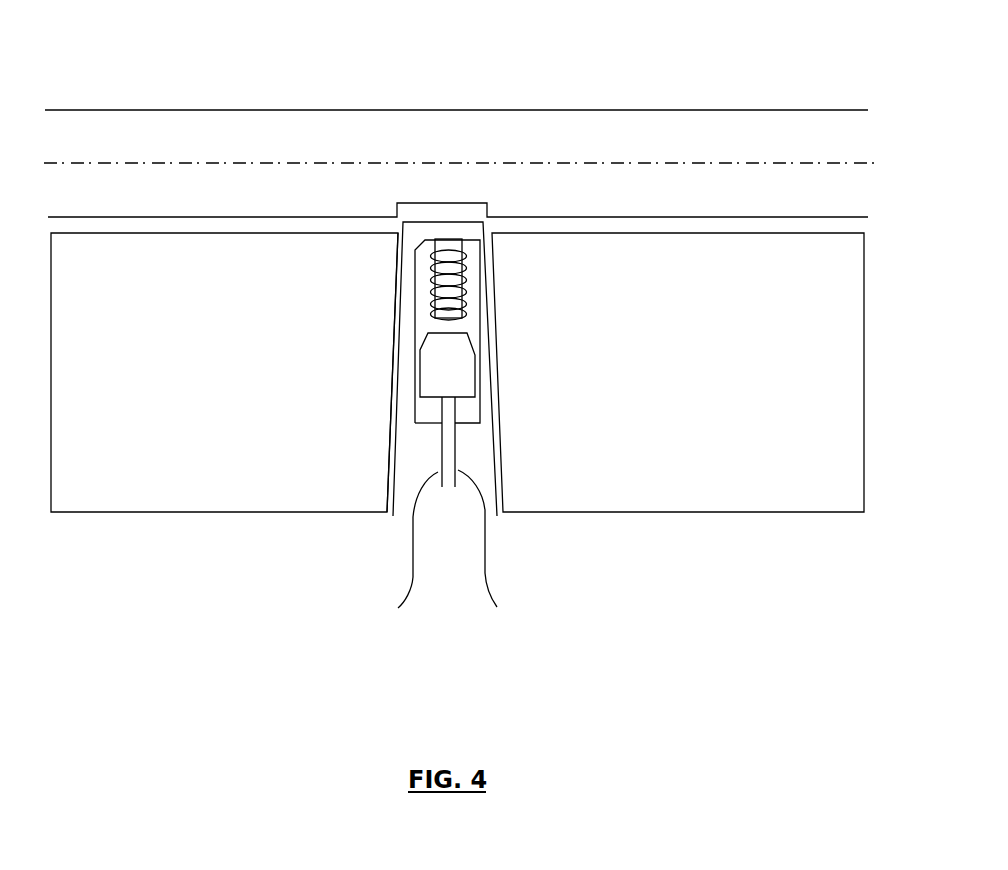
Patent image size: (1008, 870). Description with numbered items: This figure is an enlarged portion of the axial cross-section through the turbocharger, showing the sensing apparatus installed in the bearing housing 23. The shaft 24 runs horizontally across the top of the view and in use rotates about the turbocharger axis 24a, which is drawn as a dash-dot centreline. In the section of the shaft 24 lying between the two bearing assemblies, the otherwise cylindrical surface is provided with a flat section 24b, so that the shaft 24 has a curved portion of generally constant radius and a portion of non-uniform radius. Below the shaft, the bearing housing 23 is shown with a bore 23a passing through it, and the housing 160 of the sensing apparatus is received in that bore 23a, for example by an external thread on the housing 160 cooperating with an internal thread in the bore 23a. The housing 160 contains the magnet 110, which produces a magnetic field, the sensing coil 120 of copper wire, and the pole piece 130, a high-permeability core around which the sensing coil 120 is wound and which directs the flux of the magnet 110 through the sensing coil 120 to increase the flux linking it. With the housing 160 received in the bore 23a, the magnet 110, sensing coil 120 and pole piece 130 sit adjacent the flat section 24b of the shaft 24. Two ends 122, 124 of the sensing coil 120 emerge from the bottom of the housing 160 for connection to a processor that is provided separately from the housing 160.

The shaft 24 is at (540, 140).
The turbocharger axis 24a is at (810, 162).
The flat section 24b is at (422, 203).
The bearing housing 23 is at (170, 310).
The bore 23a is at (386, 495).
The magnet 110 is at (455, 378).
The sensing coil 120 is at (430, 250).
The end of sensing coil 122 is at (410, 552).
The end of sensing coil 124 is at (487, 551).
The pole piece 130 is at (438, 306).
The housing 160 is at (498, 516).